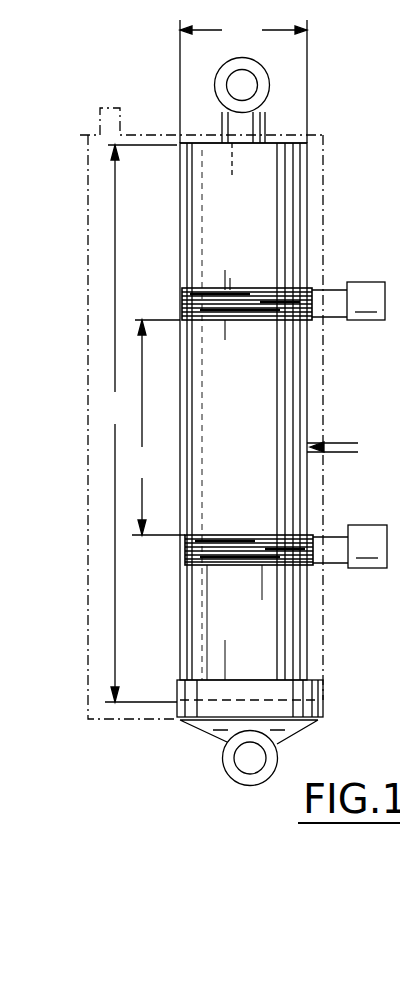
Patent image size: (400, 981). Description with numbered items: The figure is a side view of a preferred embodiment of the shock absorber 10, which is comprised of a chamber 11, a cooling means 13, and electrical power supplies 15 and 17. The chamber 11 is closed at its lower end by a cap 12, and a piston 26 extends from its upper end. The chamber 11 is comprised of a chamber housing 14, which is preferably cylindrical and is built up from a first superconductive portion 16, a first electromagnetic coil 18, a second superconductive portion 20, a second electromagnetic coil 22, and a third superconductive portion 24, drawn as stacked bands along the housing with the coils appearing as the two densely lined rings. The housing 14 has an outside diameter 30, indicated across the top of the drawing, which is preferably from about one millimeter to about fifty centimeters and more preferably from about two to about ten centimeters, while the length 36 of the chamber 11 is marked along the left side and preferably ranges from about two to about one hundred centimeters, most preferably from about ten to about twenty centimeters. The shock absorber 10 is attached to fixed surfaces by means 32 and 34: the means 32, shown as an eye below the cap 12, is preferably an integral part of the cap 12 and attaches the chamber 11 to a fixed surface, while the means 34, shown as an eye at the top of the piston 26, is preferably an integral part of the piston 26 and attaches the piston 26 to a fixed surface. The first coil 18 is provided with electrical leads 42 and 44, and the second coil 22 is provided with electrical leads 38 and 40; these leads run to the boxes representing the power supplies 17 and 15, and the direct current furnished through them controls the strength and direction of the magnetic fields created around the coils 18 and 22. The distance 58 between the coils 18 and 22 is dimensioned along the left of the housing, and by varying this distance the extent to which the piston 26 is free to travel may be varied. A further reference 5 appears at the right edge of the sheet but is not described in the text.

The reference (partial) 5 is at (396, 411).
The shock absorber 10 is at (300, 142).
The chamber 11 is at (272, 140).
The cap 12 is at (195, 727).
The cooling means 13 is at (88, 598).
The chamber housing 14 is at (346, 445).
The electrical power supply 15 is at (366, 301).
The first superconductive portion 16 is at (197, 625).
The electrical power supply 17 is at (367, 546).
The first electromagnetic coil 18 is at (185, 551).
The second superconductive portion 20 is at (190, 405).
The second electromagnetic coil 22 is at (182, 306).
The third superconductive portion 24 is at (188, 212).
The piston 26 is at (222, 131).
The outside diameter 30 is at (243, 81).
The means for attaching 32 is at (230, 770).
The means for attaching 34 is at (214, 84).
The length 36 is at (140, 423).
The electrical lead 38 is at (325, 290).
The electrical lead 40 is at (322, 318).
The electrical lead 42 is at (325, 536).
The electrical lead 44 is at (322, 565).
The distance between coils 58 is at (156, 427).